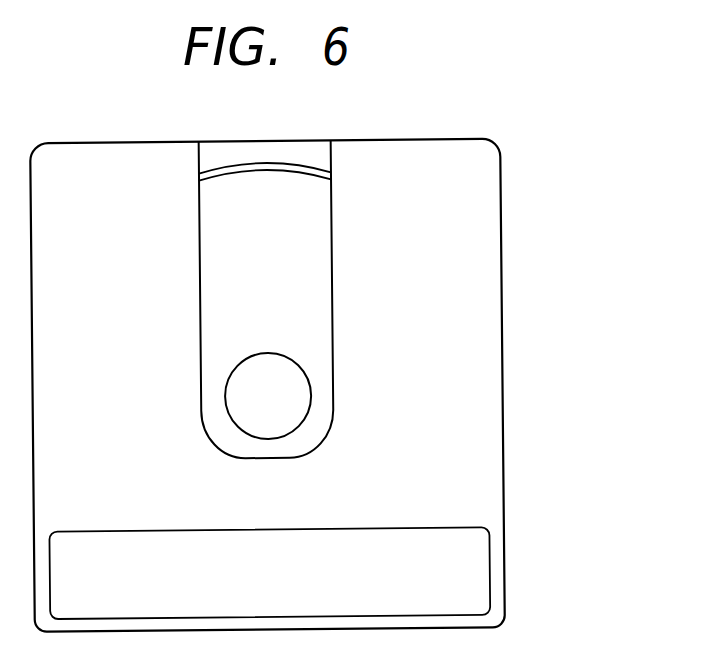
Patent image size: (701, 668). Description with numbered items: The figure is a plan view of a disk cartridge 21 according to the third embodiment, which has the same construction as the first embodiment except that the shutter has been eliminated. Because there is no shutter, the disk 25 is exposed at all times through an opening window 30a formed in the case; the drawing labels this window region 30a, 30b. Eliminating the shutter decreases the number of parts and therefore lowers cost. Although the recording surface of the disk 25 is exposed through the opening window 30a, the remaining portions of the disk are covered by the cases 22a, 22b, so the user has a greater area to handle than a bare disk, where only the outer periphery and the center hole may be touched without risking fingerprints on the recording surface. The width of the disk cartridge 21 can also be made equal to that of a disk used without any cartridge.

The disk cartridge 21 is at (339, 362).
The case 22a is at (339, 385).
The case 22b is at (505, 475).
The disk 25 is at (240, 228).
The opening window 30a is at (308, 137).
The shutter guide groove 30b is at (275, 181).